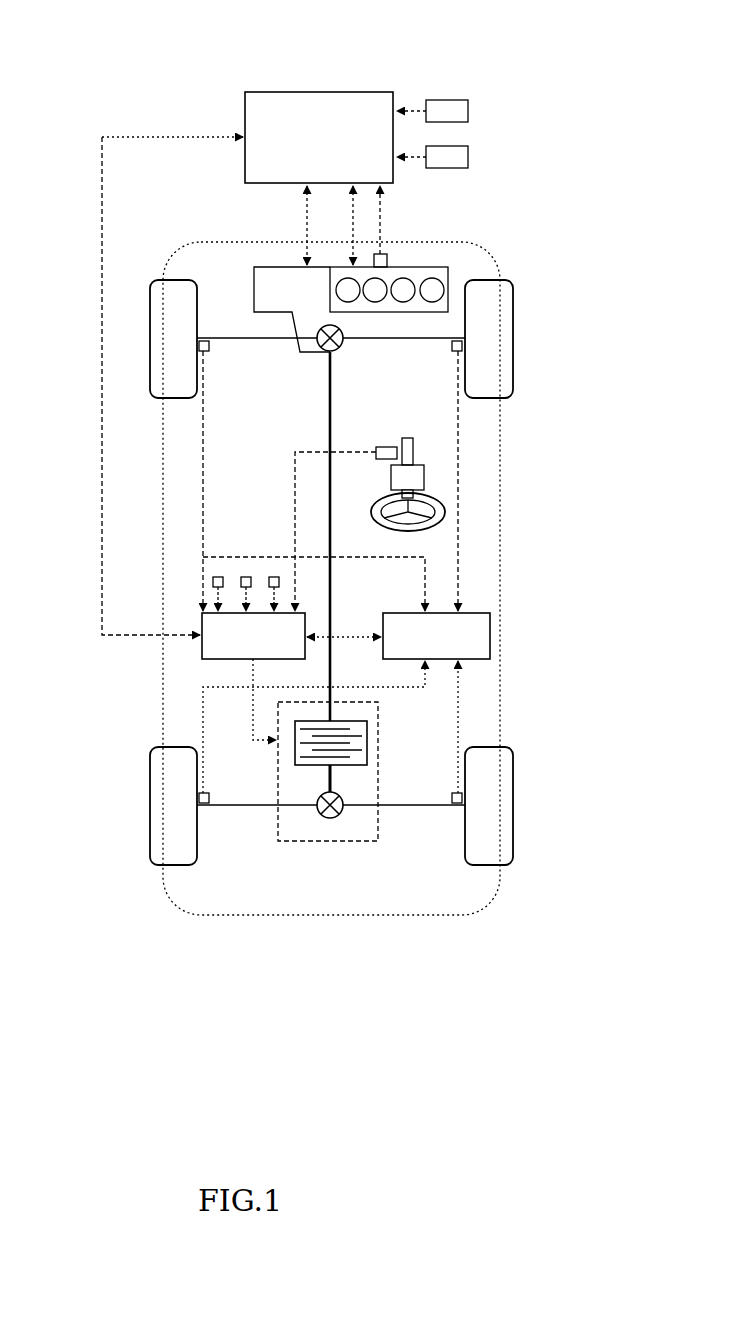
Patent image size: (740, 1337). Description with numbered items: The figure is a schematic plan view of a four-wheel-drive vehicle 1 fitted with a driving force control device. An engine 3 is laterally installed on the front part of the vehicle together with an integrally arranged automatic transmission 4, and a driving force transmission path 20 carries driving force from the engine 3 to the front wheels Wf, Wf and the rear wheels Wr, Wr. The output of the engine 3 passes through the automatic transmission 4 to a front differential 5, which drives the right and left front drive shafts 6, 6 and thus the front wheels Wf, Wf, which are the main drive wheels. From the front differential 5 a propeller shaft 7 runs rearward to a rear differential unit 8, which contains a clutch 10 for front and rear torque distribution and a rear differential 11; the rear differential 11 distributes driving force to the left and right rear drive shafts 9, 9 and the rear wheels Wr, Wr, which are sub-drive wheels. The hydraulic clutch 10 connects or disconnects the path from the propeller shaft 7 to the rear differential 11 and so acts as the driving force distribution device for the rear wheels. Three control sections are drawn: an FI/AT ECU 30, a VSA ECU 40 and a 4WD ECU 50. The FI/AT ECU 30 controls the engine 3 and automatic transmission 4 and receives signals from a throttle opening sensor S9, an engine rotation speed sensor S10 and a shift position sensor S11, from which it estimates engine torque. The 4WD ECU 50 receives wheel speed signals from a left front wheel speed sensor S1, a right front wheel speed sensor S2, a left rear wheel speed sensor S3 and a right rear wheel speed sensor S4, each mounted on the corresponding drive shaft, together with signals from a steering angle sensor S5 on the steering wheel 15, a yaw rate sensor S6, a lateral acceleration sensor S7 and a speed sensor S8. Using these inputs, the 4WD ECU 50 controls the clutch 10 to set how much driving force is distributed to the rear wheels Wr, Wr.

The four-wheel-drive vehicle 1 is at (510, 244).
The engine 3 is at (437, 267).
The automatic transmission 4 is at (275, 267).
The front differential 5 is at (339, 349).
The front drive shafts 6 is at (270, 338).
The propeller shaft 7 is at (335, 548).
The rear differential unit 8 is at (276, 720).
The rear drive shafts 9 is at (265, 805).
The clutch for front and rear torque distribution 10 is at (370, 740).
The rear differential 11 is at (337, 818).
The steering wheel 15 is at (447, 503).
The driving force transmission path 20 is at (265, 487).
The FI/AT ECU 30 is at (334, 92).
The VSA ECU 40 is at (478, 612).
The 4WD ECU 50 is at (200, 626).
The front wheels Wf is at (165, 280).
The rear wheels Wr is at (165, 747).
The left front wheel speed sensor S1 is at (207, 352).
The right front wheel speed sensor S2 is at (455, 352).
The left rear wheel speed sensor S3 is at (207, 804).
The right rear wheel speed sensor S4 is at (455, 804).
The steering angle sensor S5 is at (380, 447).
The yaw rate sensor S6 is at (274, 577).
The lateral acceleration sensor S7 is at (246, 577).
The speed sensor S8 is at (218, 577).
The throttle opening sensor S9 is at (468, 111).
The engine rotation speed sensor S10 is at (387, 256).
The shift position sensor S11 is at (468, 157).